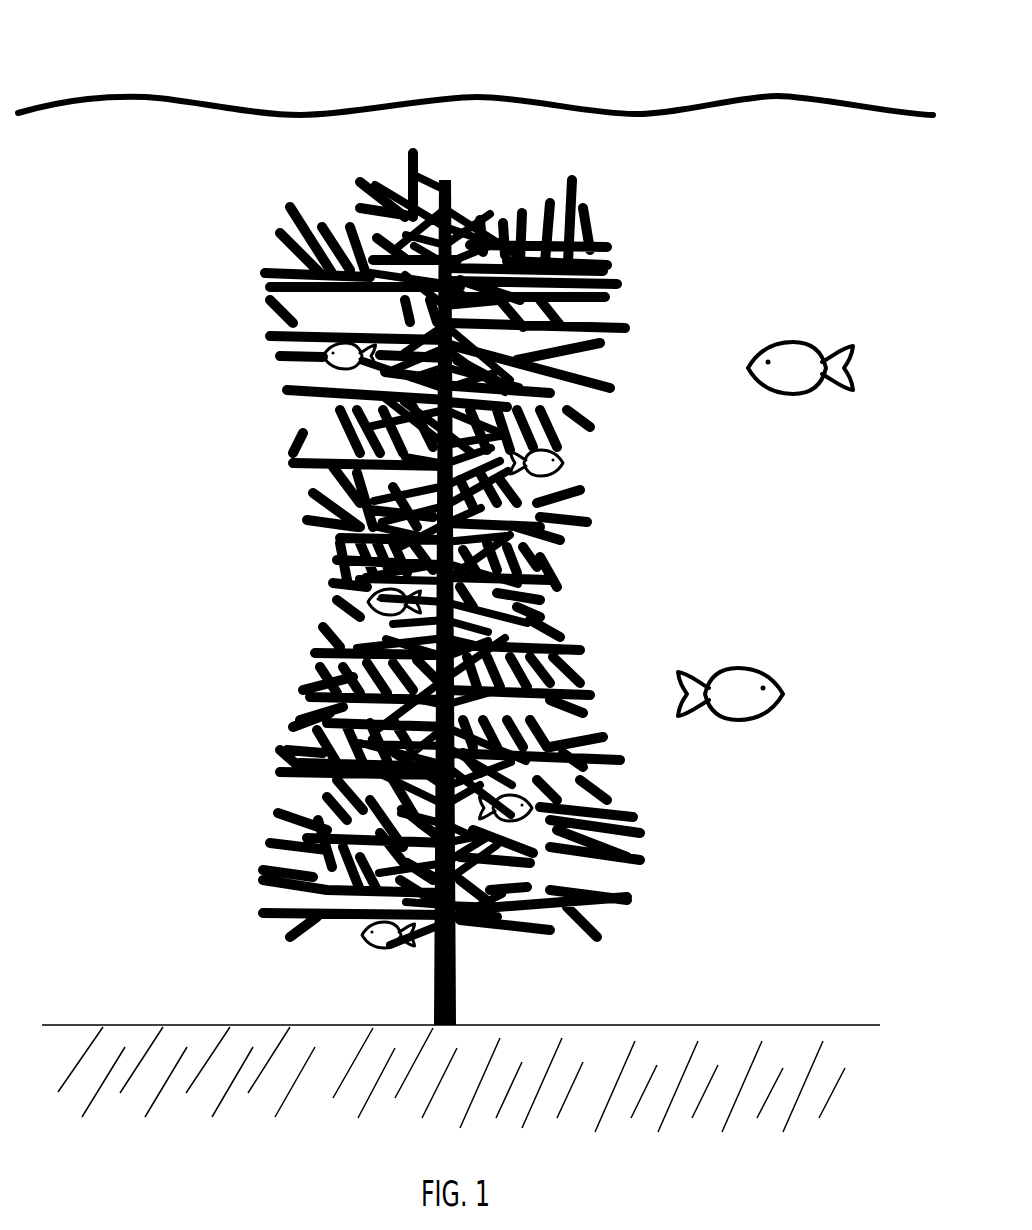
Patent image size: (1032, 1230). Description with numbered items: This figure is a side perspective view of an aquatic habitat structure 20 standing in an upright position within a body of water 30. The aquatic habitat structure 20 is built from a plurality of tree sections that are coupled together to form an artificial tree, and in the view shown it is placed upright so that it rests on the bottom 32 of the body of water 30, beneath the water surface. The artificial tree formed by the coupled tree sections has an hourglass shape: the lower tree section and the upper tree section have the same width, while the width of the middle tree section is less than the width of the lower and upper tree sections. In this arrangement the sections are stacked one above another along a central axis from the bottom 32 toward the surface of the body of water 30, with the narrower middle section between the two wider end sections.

The aquatic habitat structure 20 is at (460, 589).
The body of water 30 is at (212, 100).
The bottom 32 is at (133, 1025).